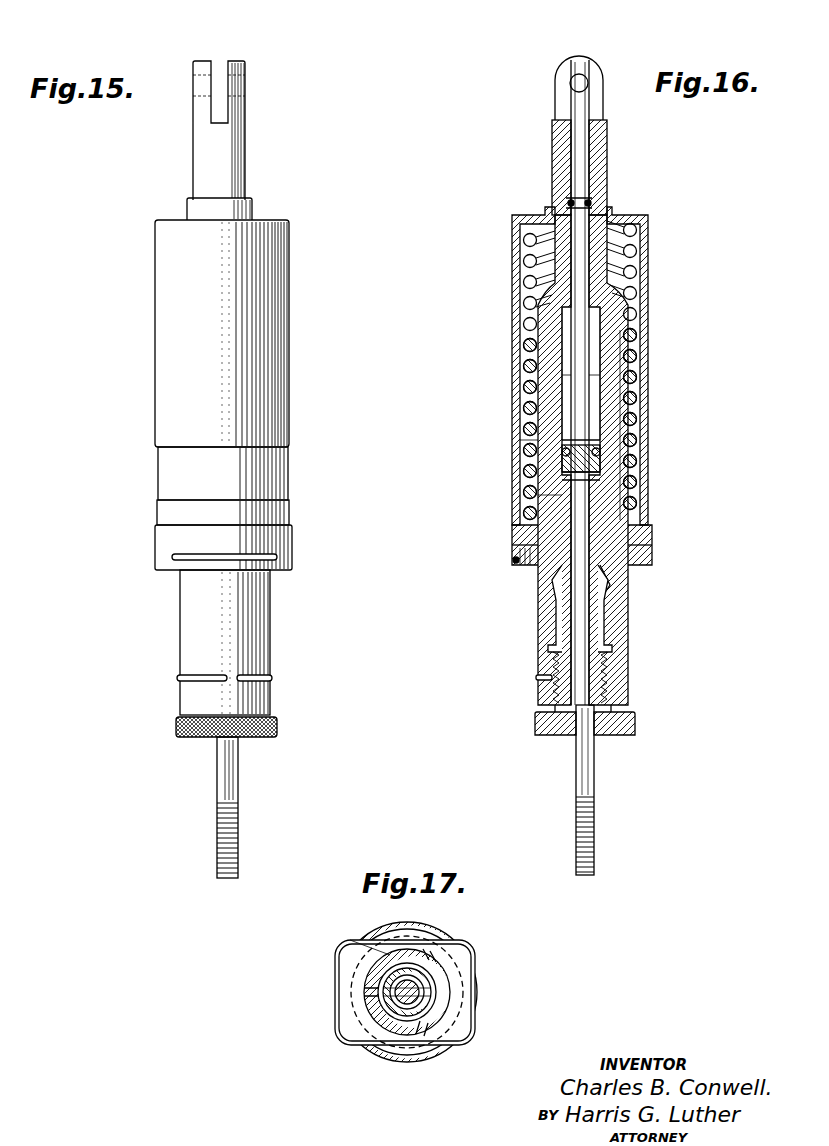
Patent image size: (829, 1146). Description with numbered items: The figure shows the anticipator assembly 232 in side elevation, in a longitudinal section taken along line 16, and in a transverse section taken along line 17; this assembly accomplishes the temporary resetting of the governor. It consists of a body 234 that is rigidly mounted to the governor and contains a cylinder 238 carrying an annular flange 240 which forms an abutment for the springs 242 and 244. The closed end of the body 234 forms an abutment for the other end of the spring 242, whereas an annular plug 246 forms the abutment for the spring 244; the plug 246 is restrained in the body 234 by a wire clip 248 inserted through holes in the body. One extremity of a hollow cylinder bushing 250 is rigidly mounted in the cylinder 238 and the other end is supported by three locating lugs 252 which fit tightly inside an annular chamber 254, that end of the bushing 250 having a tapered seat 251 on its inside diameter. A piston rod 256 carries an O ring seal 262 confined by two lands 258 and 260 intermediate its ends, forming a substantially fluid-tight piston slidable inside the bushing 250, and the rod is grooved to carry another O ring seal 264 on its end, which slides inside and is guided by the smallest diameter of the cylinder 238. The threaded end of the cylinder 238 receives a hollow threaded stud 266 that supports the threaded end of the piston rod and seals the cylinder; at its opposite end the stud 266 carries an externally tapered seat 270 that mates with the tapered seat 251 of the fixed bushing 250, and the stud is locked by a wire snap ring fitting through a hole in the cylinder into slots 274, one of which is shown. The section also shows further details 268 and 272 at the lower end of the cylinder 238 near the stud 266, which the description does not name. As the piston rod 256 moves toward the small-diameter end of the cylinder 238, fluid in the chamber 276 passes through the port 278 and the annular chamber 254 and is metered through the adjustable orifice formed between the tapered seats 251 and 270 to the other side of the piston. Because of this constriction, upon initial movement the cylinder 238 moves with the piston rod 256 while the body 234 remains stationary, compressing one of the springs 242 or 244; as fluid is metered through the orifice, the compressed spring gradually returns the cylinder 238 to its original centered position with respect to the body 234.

In FIG. 15, the section line 16 is at (188, 28).
In FIG. 16, the section line 17 is at (512, 555).
In FIG. 15, the anticipator assembly 232 is at (166, 337).
In FIG. 16, the body 234 is at (514, 258).
In FIG. 17, the body 234 is at (383, 1056).
In FIG. 16, the cylinder 238 is at (600, 183).
In FIG. 17, the cylinder 238 is at (432, 991).
In FIG. 16, the annular flange 240 is at (538, 380).
In FIG. 17, the annular flange 240 is at (465, 952).
In FIG. 16, the spring 242 is at (643, 262).
In FIG. 16, the spring 244 is at (526, 426).
In FIG. 16, the annular plug 246 is at (650, 528).
In FIG. 15, the wire clip 248 is at (180, 563).
In FIG. 16, the wire clip 248 is at (522, 568).
In FIG. 17, the wire clip 248 is at (345, 1042).
In FIG. 16, the hollow cylinder bushing 250 is at (628, 480).
In FIG. 17, the hollow cylinder bushing 250 is at (443, 982).
In FIG. 16, the tapered seat 251 is at (620, 578).
In FIG. 16, the locating lugs 252 is at (526, 535).
In FIG. 17, the locating lugs 252 is at (428, 962).
In FIG. 16, the annular chamber 254 is at (562, 452).
In FIG. 16, the piston rod 256 is at (582, 226).
In FIG. 17, the piston rod 256 is at (440, 1003).
In FIG. 16, the land 258 is at (560, 470).
In FIG. 16, the land 260 is at (540, 496).
In FIG. 16, the O ring seal 262 is at (602, 454).
In FIG. 16, the O ring seal 264 is at (568, 200).
In FIG. 16, the hollow threaded stud 266 is at (540, 724).
In FIG. 17, the hollow threaded stud 266 is at (385, 955).
In FIG. 16, the inner sleeve 268 is at (556, 600).
In FIG. 16, the externally tapered seat 270 is at (612, 570).
In FIG. 15, the groove ring 272 is at (178, 680).
In FIG. 16, the groove ring 272 is at (540, 678).
In FIG. 16, the slots 274 is at (552, 655).
In FIG. 16, the chamber 276 is at (600, 328).
In FIG. 16, the port 278 is at (612, 365).